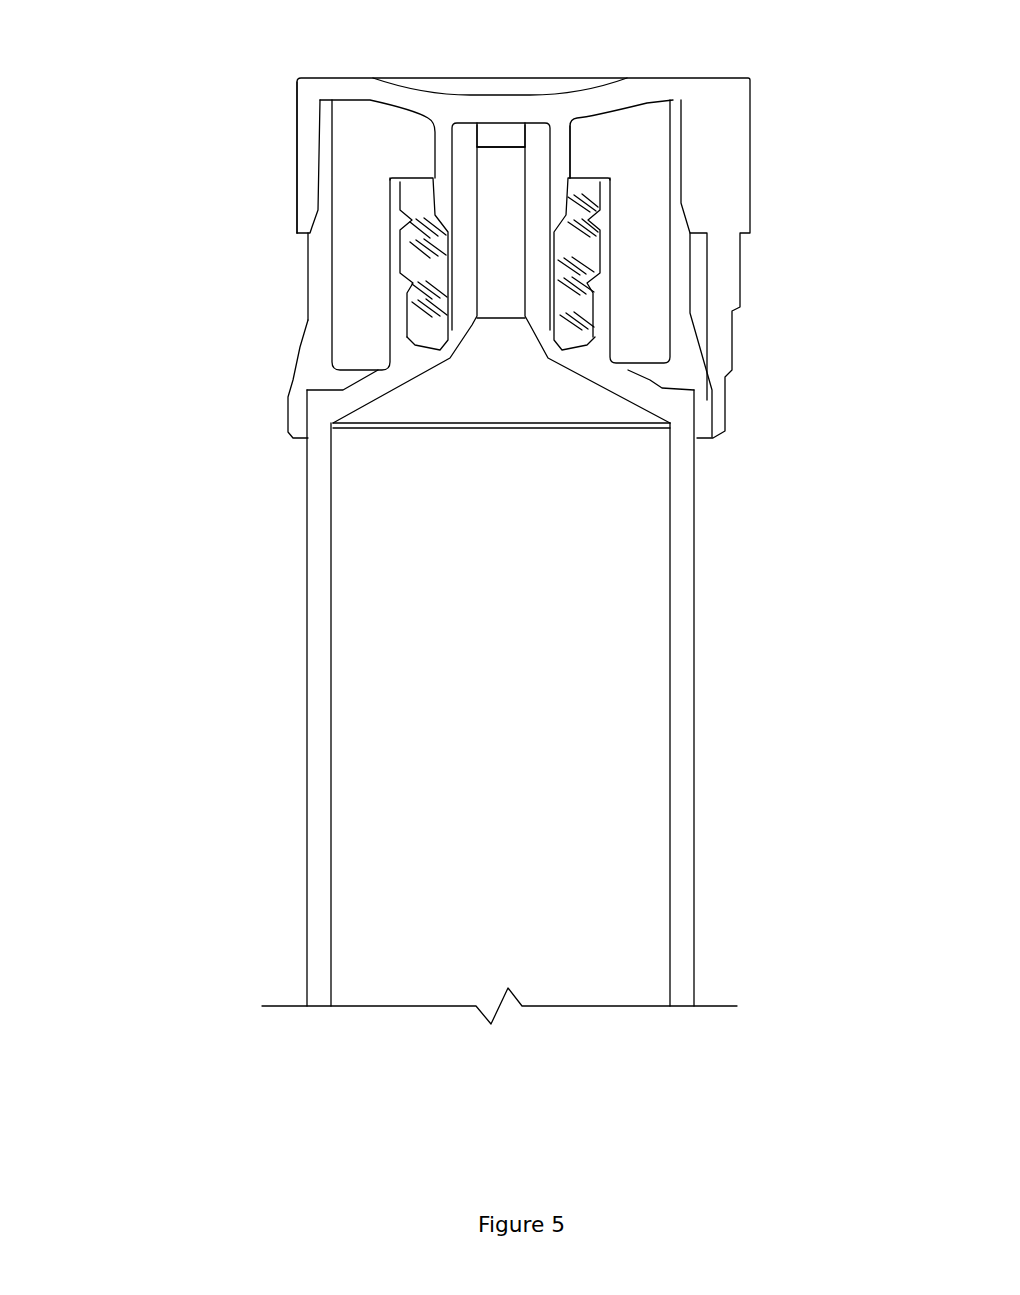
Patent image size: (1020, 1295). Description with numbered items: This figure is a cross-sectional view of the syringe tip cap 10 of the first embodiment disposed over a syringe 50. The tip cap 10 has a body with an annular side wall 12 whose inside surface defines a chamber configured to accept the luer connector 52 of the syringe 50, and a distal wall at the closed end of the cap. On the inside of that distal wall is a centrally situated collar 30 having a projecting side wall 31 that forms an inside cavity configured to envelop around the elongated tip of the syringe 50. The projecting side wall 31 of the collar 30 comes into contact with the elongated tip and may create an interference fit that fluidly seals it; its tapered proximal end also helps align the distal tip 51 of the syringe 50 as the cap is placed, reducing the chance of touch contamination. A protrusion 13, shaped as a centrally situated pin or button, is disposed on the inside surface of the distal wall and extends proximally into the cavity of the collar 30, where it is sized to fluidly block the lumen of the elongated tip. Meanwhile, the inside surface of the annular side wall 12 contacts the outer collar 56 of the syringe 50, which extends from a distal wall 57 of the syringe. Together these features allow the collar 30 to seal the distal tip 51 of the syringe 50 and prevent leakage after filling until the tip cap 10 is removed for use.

The syringe tip cap 10 is at (658, 73).
The annular side wall 12 is at (297, 192).
The protrusion 13 is at (478, 137).
The collar 30 is at (575, 140).
The projecting side wall 31 is at (562, 193).
The syringe 50 is at (688, 545).
The distal tip 51 is at (523, 297).
The luer connector 52 is at (455, 255).
The outer collar 56 is at (308, 257).
The distal wall 57 is at (323, 385).